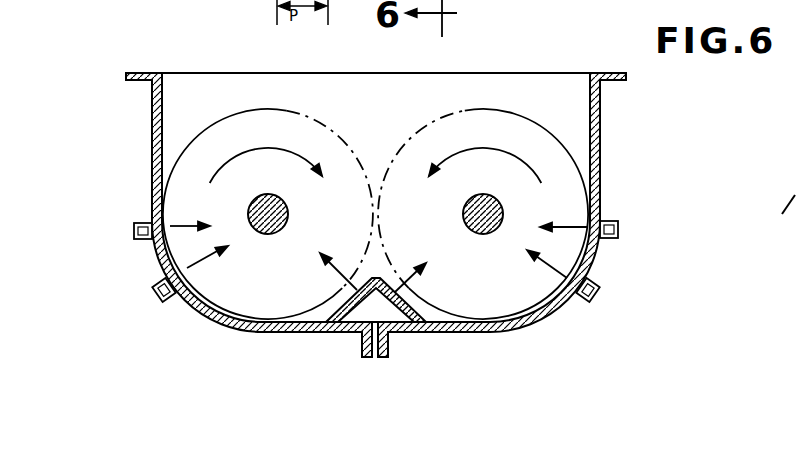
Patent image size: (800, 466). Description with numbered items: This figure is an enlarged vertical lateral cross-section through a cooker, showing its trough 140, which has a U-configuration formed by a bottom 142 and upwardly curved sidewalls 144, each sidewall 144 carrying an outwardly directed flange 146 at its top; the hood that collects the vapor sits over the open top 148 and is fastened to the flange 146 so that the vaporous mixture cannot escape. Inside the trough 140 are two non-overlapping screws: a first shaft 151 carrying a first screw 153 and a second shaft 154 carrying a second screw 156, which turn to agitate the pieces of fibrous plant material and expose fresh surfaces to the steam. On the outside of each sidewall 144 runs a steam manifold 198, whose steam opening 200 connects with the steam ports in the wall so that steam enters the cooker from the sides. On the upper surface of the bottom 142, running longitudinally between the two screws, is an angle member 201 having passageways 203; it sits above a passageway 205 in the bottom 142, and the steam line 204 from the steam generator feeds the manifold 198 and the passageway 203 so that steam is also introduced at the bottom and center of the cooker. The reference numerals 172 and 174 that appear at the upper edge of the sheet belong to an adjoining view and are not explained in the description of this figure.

The trough 140 is at (457, 332).
The bottom 142 is at (305, 332).
The sidewall 144 is at (152, 140).
The outwardly directed flange 146 is at (142, 79).
The open top 148 is at (288, 78).
The first shaft 151 is at (278, 196).
The first screw 153 is at (350, 108).
The second shaft 154 is at (500, 170).
The second screw 156 is at (505, 122).
The steam manifold 198 is at (150, 283).
The steam opening 200 is at (350, 301).
The angle member 201 is at (378, 282).
The passageway 203 is at (348, 300).
The steam line 204 is at (364, 352).
The passageway 205 is at (390, 352).
The adjacent figure numeral 172 is at (116, 19).
The adjacent figure numeral 174 is at (51, 18).